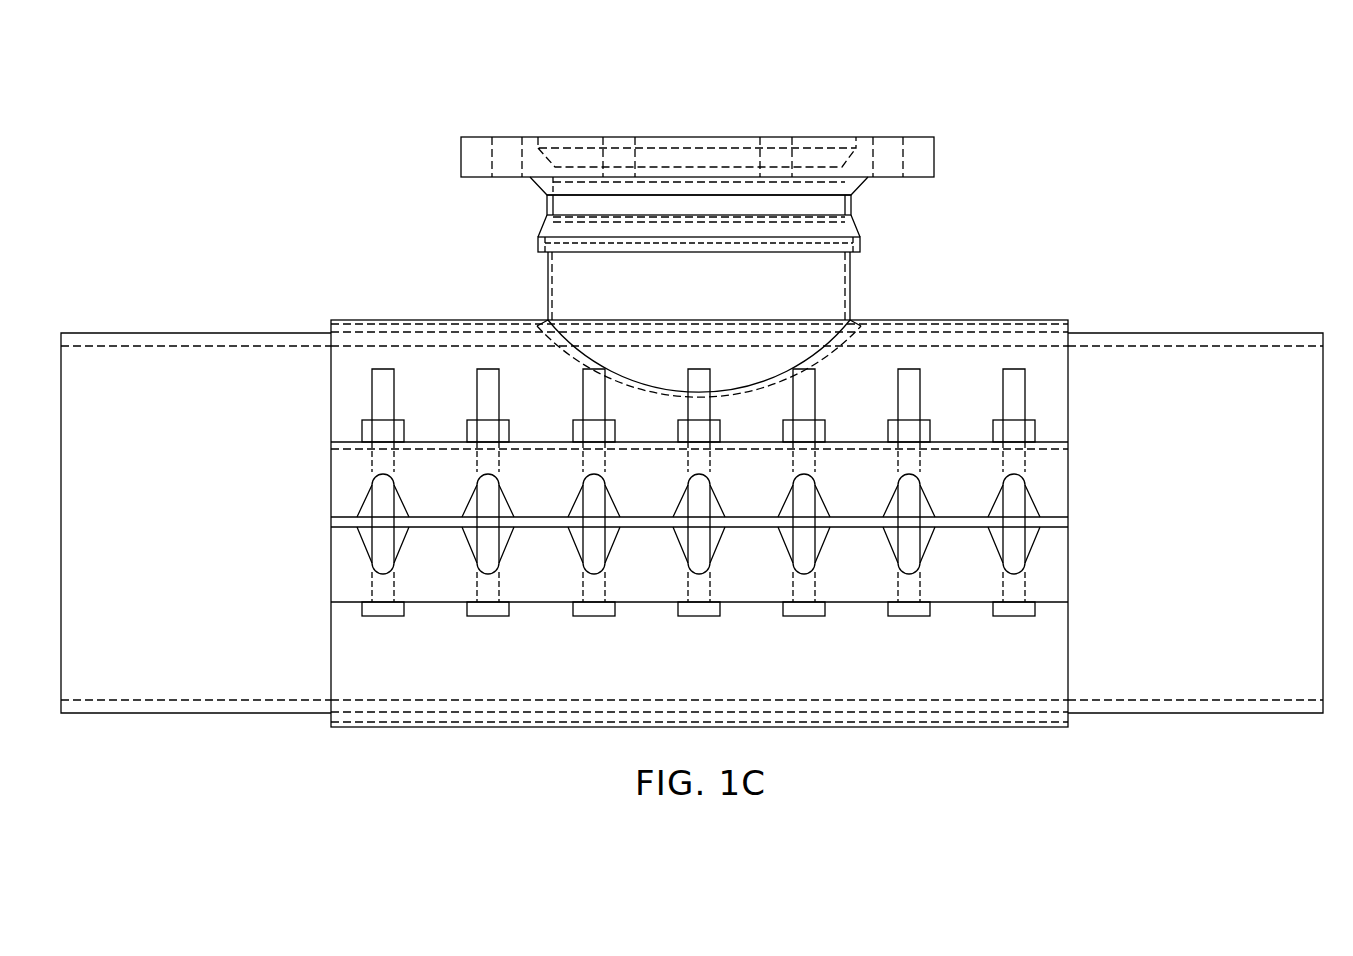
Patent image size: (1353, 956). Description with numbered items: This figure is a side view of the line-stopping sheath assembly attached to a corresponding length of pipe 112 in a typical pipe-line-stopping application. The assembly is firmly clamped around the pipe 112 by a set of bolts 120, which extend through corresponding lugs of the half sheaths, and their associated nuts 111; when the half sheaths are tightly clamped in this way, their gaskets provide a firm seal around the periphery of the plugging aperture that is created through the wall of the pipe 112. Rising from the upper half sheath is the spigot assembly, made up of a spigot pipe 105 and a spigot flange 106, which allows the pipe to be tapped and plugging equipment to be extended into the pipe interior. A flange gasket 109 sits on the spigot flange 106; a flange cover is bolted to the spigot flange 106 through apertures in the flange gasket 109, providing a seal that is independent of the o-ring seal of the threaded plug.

The spigot pipe 105 is at (547, 288).
The spigot flange 106 is at (935, 160).
The flange gasket 109 is at (818, 137).
The nuts 111 is at (925, 419).
The pipe 112 is at (1193, 332).
The bolts 120 is at (913, 616).